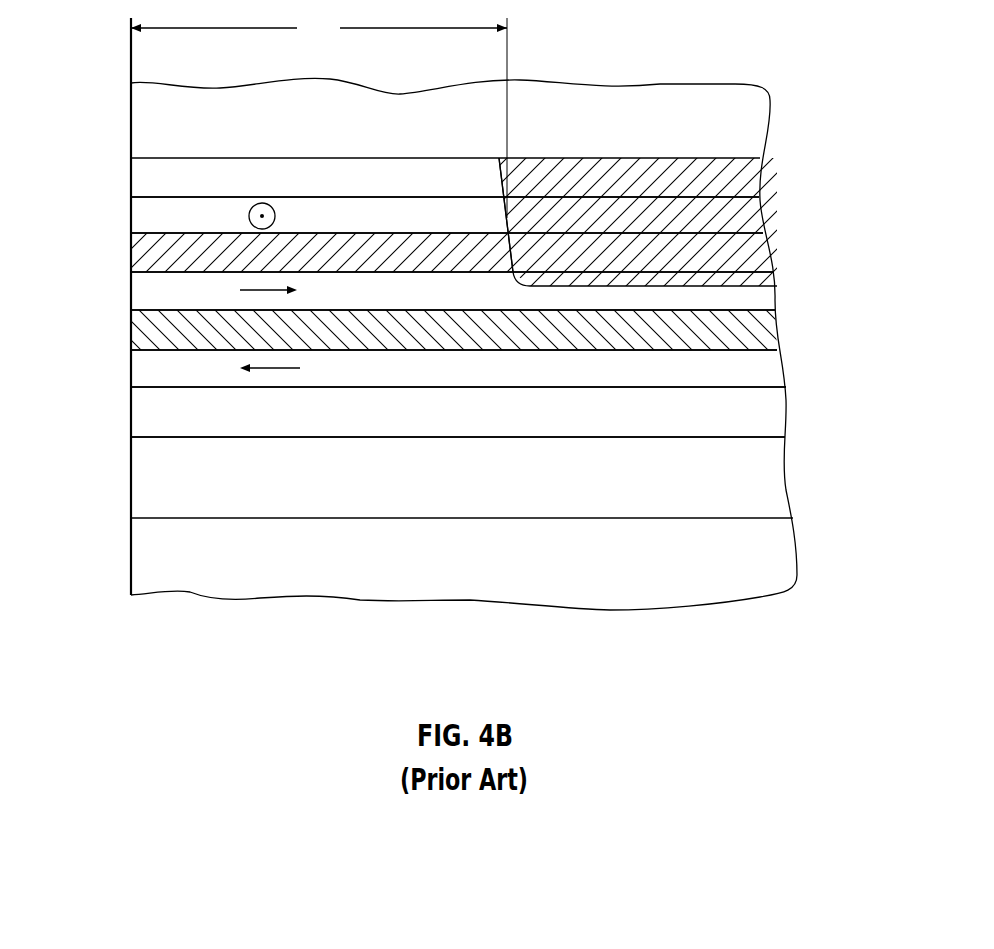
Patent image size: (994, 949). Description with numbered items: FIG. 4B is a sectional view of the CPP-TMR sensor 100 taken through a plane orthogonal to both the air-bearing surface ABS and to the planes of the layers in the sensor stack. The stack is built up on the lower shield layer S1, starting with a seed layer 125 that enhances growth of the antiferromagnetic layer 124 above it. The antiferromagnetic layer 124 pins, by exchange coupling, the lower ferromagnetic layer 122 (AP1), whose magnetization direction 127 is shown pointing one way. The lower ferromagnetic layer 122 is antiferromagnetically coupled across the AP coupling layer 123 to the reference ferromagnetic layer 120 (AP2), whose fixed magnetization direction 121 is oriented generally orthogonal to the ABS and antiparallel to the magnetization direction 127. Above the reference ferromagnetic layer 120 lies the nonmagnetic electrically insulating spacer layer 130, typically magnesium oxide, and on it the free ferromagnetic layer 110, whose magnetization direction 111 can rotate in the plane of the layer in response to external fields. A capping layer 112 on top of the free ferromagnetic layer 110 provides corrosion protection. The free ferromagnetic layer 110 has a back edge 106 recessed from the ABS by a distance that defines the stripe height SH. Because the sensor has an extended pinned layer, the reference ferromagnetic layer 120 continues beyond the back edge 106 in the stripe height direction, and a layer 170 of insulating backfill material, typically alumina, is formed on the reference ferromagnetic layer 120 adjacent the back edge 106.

The CPP-TMR sensor 100 is at (83, 160).
The back edge 106 is at (504, 224).
The free ferromagnetic layer 110 is at (427, 232).
The magnetization direction 111 is at (262, 203).
The capping layer 112 is at (427, 193).
The reference ferromagnetic layer 120 is at (427, 305).
The magnetization direction 121 is at (262, 288).
The lower ferromagnetic layer 122 is at (427, 382).
The AP coupling layer 123 is at (427, 342).
The antiferromagnetic layer 124 is at (427, 425).
The seed layer 125 is at (427, 492).
The magnetization direction 127 is at (262, 365).
The nonmagnetic electrically insulating spacer layer 130 is at (427, 267).
The insulating backfill layer 170 is at (745, 233).
The air-bearing surface ABS is at (128, 125).
The stripe height SH is at (319, 118).
The lower shield layer S1 is at (612, 593).